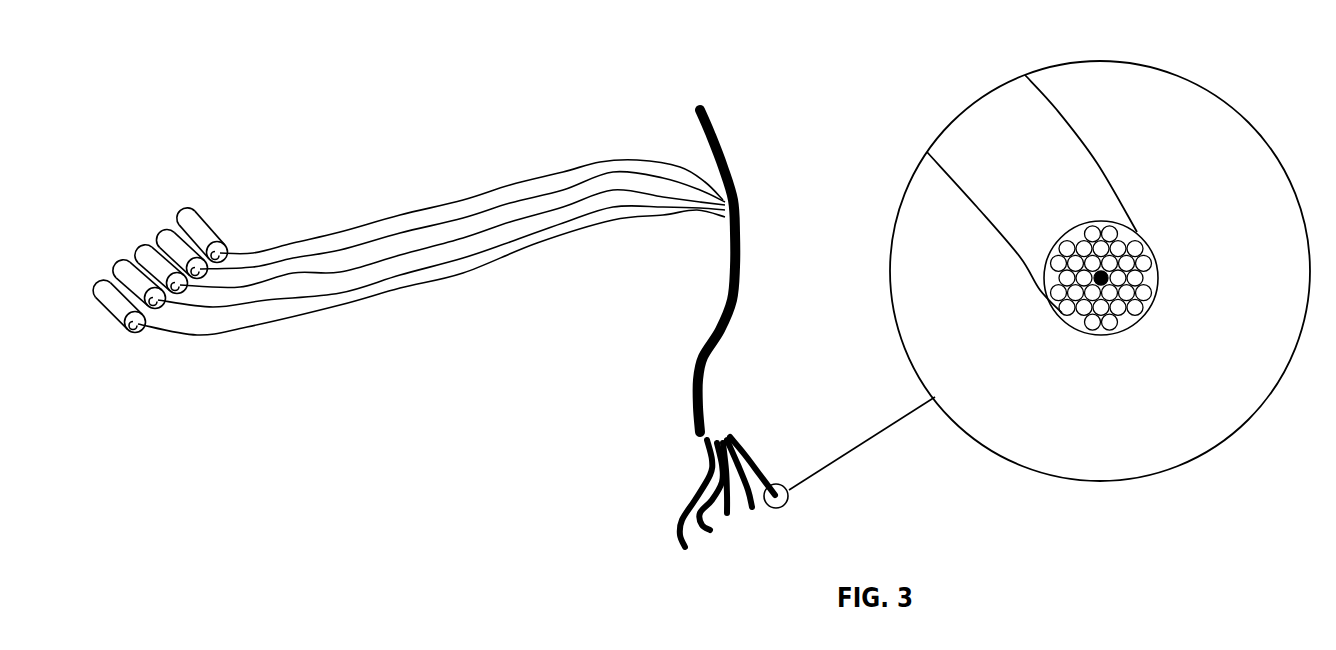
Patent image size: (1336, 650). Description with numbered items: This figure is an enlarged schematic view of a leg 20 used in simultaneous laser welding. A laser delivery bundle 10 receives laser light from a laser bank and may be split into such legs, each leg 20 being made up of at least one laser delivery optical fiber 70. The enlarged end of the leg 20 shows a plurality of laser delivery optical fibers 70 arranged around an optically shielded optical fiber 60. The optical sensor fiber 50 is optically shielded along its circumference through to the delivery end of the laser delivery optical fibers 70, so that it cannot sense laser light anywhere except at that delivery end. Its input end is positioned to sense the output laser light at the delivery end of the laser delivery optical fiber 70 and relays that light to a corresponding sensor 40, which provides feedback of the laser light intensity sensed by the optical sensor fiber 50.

The laser delivery bundle 10 is at (738, 173).
The leg 20 is at (745, 451).
The sensor 40 is at (142, 245).
The optical sensor fiber 50 is at (458, 198).
The optically shielded optical fiber 60 is at (1107, 288).
The laser delivery optical fiber 70 is at (1064, 312).